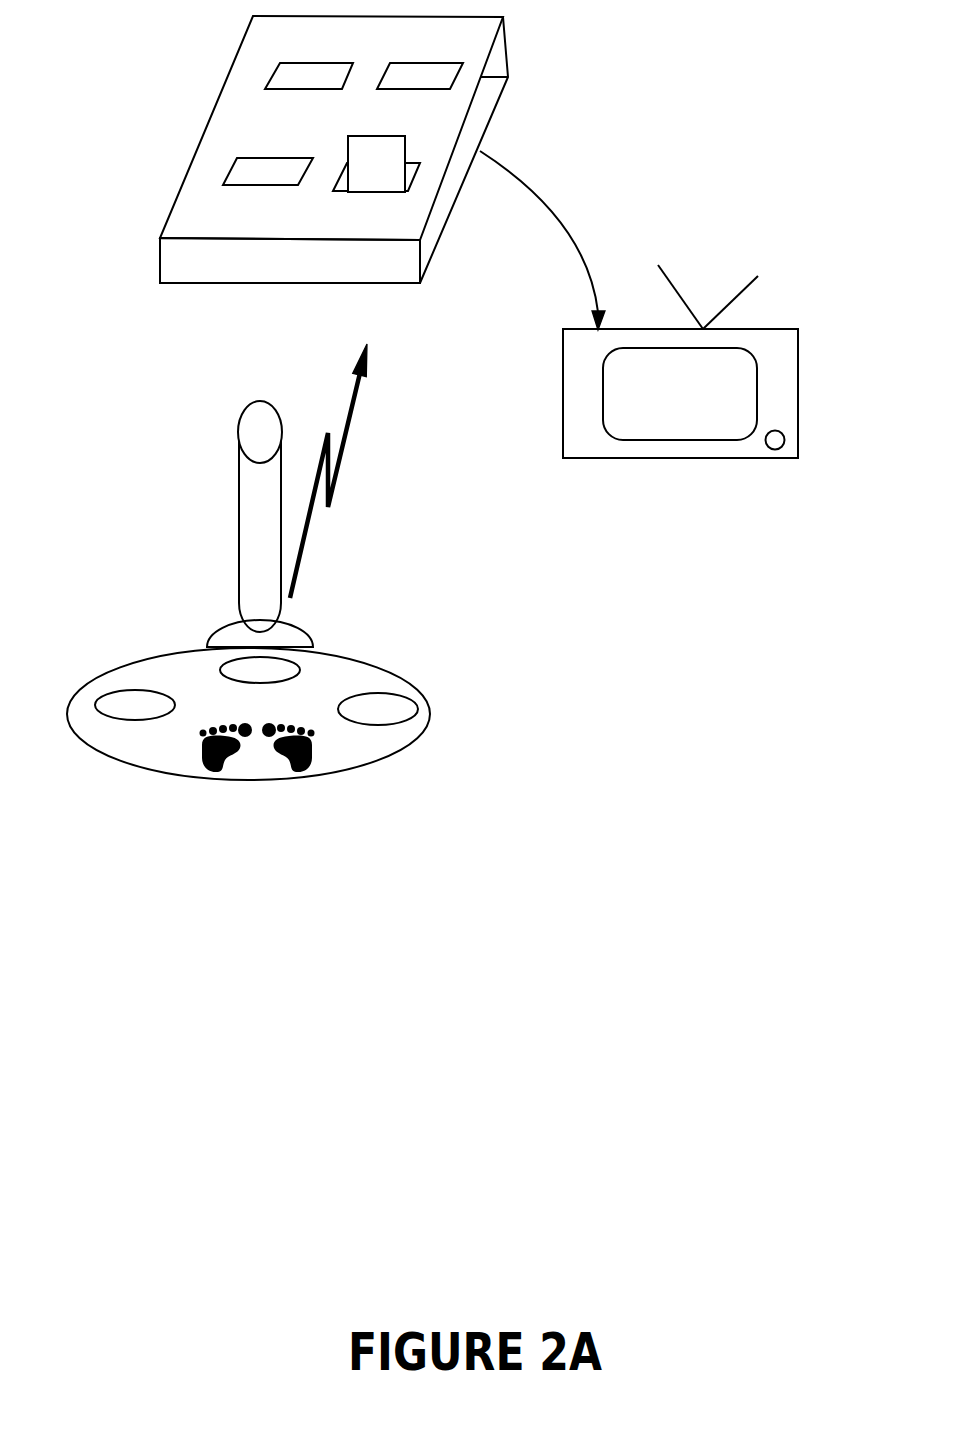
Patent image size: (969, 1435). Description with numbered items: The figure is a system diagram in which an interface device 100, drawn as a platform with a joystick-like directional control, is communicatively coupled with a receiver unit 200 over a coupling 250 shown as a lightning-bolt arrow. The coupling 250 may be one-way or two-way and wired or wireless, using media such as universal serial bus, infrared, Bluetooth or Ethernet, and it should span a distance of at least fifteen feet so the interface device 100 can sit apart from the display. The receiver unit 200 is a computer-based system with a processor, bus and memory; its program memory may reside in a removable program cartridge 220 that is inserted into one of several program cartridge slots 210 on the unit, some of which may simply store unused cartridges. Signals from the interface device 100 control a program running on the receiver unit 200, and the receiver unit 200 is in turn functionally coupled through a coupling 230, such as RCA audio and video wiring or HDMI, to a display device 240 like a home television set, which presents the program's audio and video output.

The interface device 100 is at (204, 617).
The receiver unit 200 is at (392, 43).
The program cartridge slots 210 is at (295, 73).
The program cartridge 220 is at (380, 163).
The coupling 230 is at (560, 188).
The display device 240 is at (700, 405).
The coupling 250 is at (340, 505).